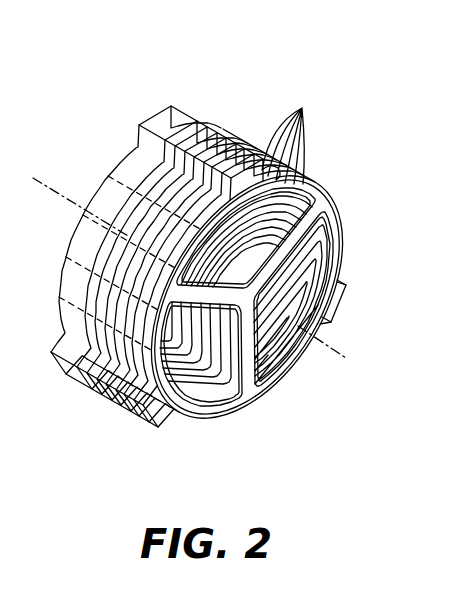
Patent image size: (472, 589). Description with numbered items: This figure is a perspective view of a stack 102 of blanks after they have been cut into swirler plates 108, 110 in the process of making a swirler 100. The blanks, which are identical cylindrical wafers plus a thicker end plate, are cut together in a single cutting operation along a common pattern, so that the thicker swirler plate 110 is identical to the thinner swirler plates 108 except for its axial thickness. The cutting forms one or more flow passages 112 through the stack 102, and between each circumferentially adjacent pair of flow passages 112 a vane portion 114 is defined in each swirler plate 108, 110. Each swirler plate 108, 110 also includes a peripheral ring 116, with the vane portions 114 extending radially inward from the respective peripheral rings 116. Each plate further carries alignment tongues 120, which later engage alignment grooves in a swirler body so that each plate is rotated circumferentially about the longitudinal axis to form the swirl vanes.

The swirler 100 is at (88, 62).
The stack 102 is at (336, 188).
The swirler plates 108 is at (294, 133).
The swirler plate 110 is at (214, 135).
The flow passages 112 is at (262, 224).
The vane portions 114 is at (196, 292).
The peripheral ring 116 is at (192, 422).
The alignment tongues 120 is at (200, 128).